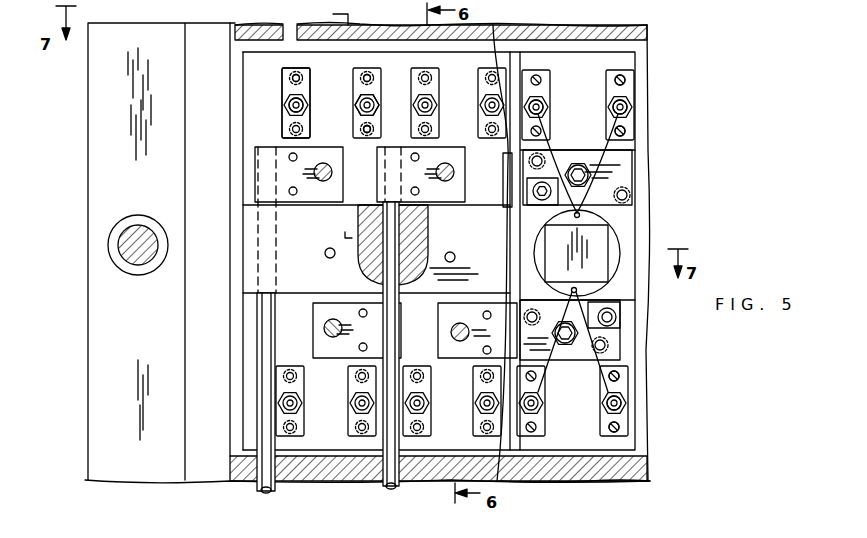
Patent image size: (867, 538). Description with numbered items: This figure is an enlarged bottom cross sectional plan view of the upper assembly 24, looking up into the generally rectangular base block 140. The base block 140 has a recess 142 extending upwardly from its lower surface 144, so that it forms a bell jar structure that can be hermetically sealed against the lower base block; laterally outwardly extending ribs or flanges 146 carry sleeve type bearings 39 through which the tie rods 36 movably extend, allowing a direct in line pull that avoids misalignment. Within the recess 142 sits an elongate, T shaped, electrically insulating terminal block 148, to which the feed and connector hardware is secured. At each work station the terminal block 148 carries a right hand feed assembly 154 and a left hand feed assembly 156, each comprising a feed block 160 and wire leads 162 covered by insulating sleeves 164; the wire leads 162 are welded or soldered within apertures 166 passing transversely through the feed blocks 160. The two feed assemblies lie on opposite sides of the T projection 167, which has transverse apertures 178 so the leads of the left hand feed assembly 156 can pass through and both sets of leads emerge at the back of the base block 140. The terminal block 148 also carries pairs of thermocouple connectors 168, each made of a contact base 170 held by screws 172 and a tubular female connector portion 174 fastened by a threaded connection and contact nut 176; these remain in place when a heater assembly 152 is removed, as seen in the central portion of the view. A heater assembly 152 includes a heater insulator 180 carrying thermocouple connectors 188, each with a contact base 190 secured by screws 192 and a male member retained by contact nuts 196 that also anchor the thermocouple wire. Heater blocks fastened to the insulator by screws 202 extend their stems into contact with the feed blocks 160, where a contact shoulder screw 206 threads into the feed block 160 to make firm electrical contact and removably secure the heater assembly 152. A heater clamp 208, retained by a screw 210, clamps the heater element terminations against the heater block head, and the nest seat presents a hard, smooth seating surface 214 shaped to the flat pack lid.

The upper assembly 24 is at (223, 490).
The tie rods 36 is at (142, 233).
The sleeve type bearings 39 is at (128, 219).
The base block 140 is at (205, 473).
The recess 142 is at (262, 492).
The lower surface 144 is at (562, 479).
The ribs or flanges 146 is at (155, 478).
The terminal block 148 is at (320, 441).
The heater assembly 152 is at (642, 226).
The right hand feed assembly 154 is at (308, 332).
The left hand feed assembly 156 is at (375, 172).
The feed block 160 is at (330, 187).
The wire leads 162 is at (386, 494).
The insulating sleeves 164 is at (271, 484).
The apertures 166 is at (243, 184).
The T projection 167 is at (478, 238).
The thermocouple connectors 168 is at (356, 80).
The contact base 170 is at (283, 84).
The screws 172 is at (296, 72).
The female connector portion 174 is at (288, 104).
The contact nut 176 is at (355, 105).
The apertures 178 is at (416, 250).
The heater insulator 180 is at (604, 477).
The heater assembly thermocouple connectors 188 is at (658, 77).
The contact base 190 is at (632, 122).
The screws 192 is at (624, 82).
The contact nuts 196 is at (618, 103).
The screws 202 is at (530, 161).
The contact shoulder screw 206 is at (578, 162).
The heater clamp 208 is at (527, 190).
The screw 210 is at (614, 318).
The seating surface 214 is at (577, 243).